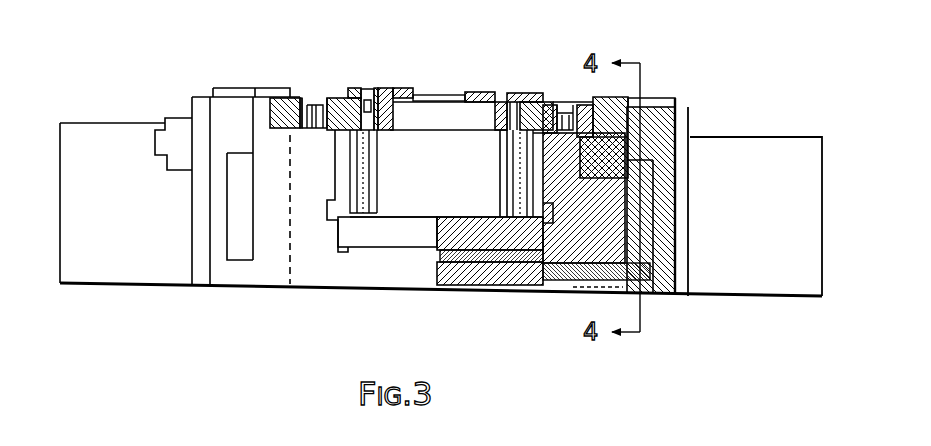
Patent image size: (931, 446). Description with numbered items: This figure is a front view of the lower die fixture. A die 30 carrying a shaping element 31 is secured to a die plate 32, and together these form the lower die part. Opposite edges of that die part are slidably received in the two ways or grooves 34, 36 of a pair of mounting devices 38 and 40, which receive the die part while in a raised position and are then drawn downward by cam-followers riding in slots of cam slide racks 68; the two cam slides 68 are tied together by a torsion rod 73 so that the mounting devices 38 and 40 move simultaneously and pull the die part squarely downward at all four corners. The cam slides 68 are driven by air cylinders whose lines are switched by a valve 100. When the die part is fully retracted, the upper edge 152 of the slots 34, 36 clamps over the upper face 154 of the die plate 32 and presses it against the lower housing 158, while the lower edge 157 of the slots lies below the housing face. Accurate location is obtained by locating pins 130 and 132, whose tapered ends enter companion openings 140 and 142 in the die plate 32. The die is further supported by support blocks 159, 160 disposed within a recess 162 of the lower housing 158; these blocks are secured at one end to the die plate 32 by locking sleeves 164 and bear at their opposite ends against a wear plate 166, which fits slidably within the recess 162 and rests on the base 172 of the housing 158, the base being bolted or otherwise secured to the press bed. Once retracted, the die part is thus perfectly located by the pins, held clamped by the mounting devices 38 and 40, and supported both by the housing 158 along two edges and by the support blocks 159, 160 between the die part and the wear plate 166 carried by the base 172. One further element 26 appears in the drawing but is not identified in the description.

The base block 26 is at (133, 277).
The valve 100 is at (165, 128).
The mounting device 38 is at (231, 86).
The way or groove 34 is at (258, 88).
The cam slide rack 68 is at (242, 253).
The lower housing 158 is at (302, 275).
The lower edge of the slots 157 is at (270, 128).
The upper edge of the slots 152 is at (293, 97).
The locating pin 130 is at (313, 105).
The opening 140 is at (328, 98).
The locking sleeve 164 is at (342, 100).
The support block 159 is at (375, 148).
The die 30 is at (402, 92).
The shaping element 31 is at (427, 97).
The die plate 32 is at (453, 105).
The recess 162 is at (445, 183).
The support block 160 is at (518, 220).
The locating pin 132 is at (548, 98).
The opening 142 is at (570, 113).
The upper face of the die plate 154 is at (580, 105).
The way or groove 36 is at (578, 152).
The mounting device 40 is at (685, 95).
The base 172 is at (367, 243).
The wear plate 166 is at (487, 240).
The torsion rod 73 is at (543, 263).